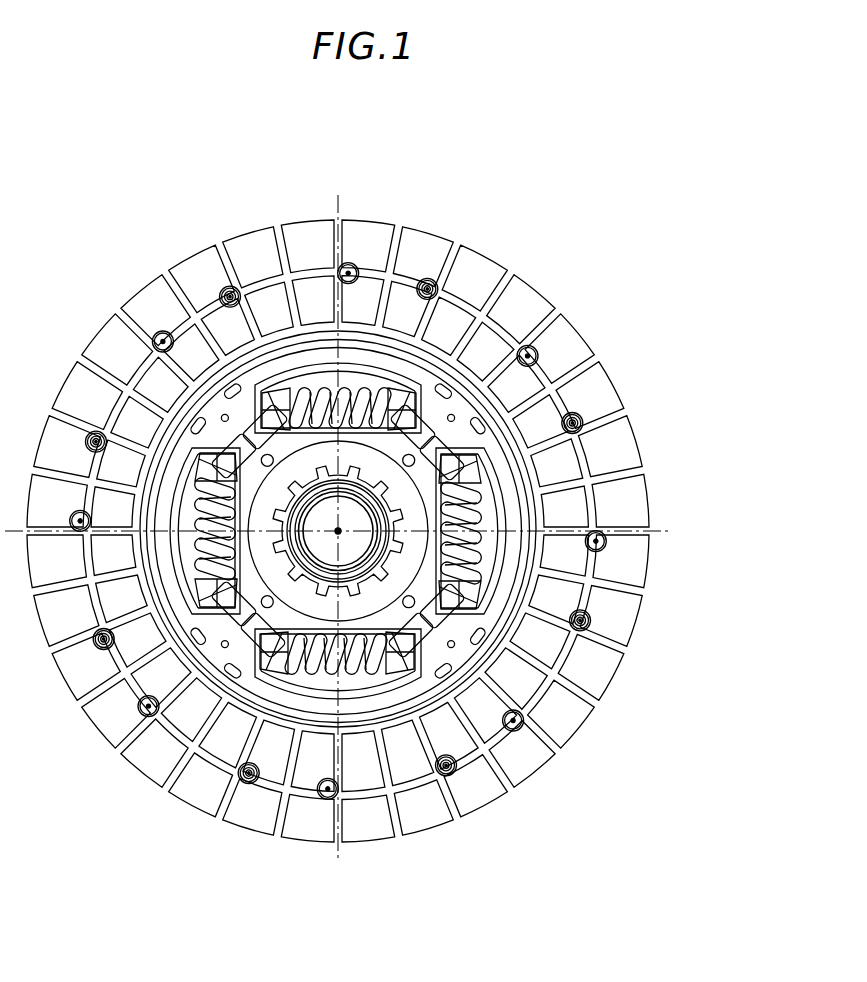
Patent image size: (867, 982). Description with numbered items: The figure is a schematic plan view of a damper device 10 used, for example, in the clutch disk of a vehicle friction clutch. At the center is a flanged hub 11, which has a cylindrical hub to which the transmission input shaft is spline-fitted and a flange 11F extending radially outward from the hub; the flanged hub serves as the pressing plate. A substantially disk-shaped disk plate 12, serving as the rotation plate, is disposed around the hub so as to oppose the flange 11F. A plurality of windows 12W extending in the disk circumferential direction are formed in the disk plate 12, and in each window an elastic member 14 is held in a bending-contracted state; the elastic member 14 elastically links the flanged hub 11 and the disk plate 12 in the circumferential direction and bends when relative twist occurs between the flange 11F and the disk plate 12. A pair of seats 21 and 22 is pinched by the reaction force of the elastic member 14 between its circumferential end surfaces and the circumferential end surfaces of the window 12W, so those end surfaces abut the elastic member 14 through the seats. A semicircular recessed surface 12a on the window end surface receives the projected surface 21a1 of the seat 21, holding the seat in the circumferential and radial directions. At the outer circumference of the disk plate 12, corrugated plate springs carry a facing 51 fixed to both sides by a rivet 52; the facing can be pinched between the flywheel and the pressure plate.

The damper device 10 is at (90, 137).
The flanged hub 11 is at (393, 560).
The flange 11F is at (473, 460).
The disk plate 12 is at (410, 597).
The recessed surface 12a is at (451, 425).
The window 12W is at (505, 588).
The elastic member 14 is at (488, 513).
The seat 21 is at (470, 473).
The projected surface 21a1 is at (455, 440).
The seat 22 is at (468, 610).
The facing 51 is at (150, 758).
The rivet 52 is at (138, 707).